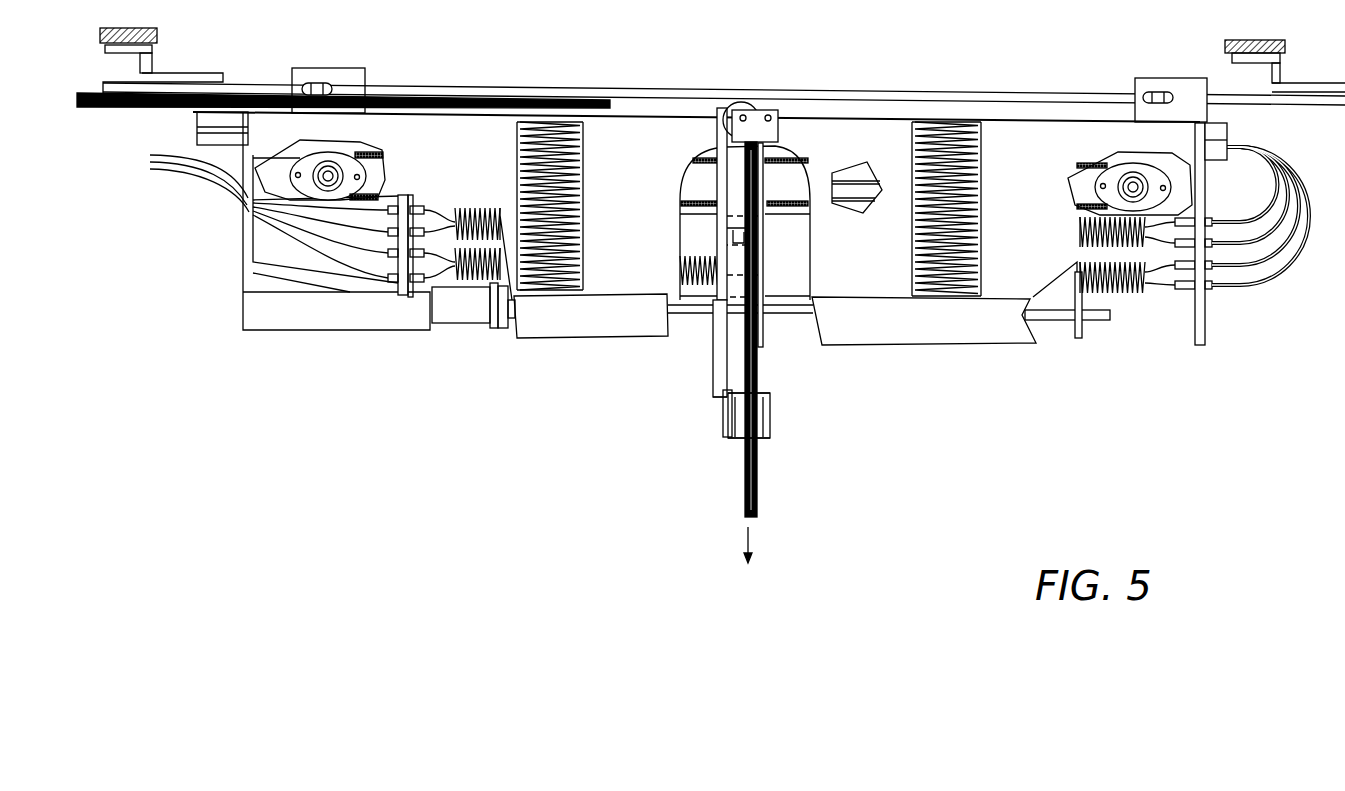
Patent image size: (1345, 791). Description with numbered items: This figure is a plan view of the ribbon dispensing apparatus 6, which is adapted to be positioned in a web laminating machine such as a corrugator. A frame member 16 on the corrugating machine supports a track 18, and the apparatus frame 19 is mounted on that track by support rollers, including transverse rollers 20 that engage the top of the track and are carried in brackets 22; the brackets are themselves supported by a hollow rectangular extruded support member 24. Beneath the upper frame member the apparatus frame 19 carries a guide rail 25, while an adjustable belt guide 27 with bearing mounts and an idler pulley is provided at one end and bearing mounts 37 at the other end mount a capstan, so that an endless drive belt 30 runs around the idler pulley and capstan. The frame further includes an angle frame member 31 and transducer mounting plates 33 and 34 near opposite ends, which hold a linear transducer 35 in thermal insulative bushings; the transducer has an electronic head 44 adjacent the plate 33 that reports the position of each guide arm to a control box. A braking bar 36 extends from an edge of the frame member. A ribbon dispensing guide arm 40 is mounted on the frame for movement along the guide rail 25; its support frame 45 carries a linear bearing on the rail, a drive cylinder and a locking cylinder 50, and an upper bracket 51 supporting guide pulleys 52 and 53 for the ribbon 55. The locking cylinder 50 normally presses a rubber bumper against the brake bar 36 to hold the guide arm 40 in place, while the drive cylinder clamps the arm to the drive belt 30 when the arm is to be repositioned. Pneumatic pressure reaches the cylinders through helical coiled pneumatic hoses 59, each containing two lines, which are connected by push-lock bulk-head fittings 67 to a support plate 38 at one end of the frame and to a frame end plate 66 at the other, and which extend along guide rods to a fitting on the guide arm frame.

The ribbon dispensing apparatus 6 is at (210, 254).
The frame member 16 is at (1243, 42).
The track 18 is at (941, 97).
The apparatus frame 19 is at (617, 112).
The transverse rollers 20 is at (316, 88).
The brackets 22 is at (311, 68).
The support member 24 is at (1232, 132).
The guide rail 25 is at (880, 186).
The adjustable belt guide 27 is at (1116, 166).
The endless drive belt 30 is at (396, 196).
The angle frame member 31 is at (978, 346).
The transducer mounting plate 33 is at (512, 318).
The transducer mounting plate 34 is at (1085, 326).
The linear transducer 35 is at (688, 315).
The braking bar 36 is at (692, 212).
The bearing mounts 37 is at (350, 158).
The support plate 38 is at (396, 294).
The ribbon dispensing guide arm 40 is at (790, 383).
The electronic head 44 is at (472, 324).
The support frame 45 is at (776, 250).
The locking cylinder 50 is at (750, 276).
The upper bracket 51 is at (717, 142).
The guide pulley 52 is at (762, 108).
The guide pulley 53 is at (771, 423).
The ribbon 55 is at (760, 486).
The helical coiled pneumatic hoses 59 is at (690, 258).
The frame end plate 66 is at (1206, 322).
The push-lock bulk-head fittings 67 is at (411, 298).